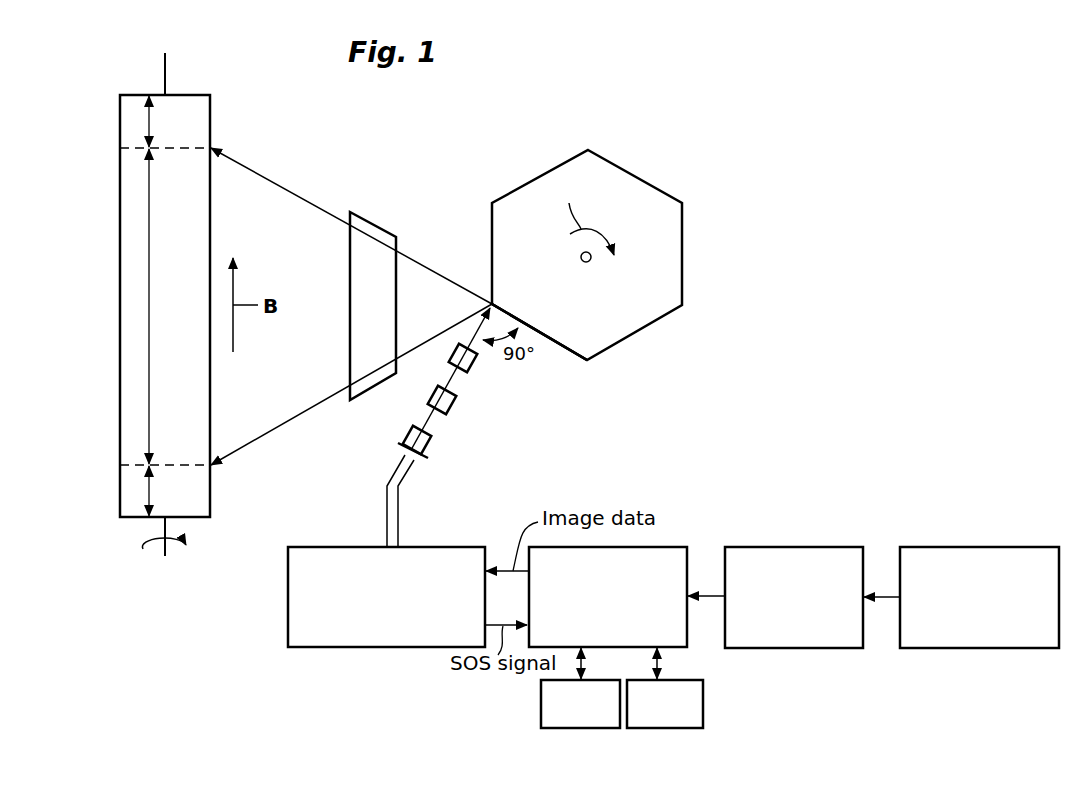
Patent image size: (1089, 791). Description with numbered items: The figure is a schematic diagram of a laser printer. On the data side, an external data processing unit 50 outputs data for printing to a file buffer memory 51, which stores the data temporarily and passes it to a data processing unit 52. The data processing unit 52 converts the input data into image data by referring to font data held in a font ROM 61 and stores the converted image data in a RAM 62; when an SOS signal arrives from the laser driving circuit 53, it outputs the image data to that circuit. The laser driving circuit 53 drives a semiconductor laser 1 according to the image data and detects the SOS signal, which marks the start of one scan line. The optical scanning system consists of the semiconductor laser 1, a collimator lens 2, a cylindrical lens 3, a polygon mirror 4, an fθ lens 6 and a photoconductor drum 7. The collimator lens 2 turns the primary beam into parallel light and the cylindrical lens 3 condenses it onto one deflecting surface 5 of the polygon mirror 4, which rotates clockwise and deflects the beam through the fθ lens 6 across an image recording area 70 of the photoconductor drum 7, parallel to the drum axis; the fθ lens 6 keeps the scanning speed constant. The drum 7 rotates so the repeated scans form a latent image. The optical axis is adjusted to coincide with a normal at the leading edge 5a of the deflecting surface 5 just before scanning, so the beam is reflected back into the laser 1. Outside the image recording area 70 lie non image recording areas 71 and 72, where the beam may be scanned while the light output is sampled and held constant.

The semiconductor laser 1 is at (422, 443).
The collimator lens 2 is at (452, 407).
The cylindrical lens 3 is at (472, 364).
The polygon mirror 4 is at (560, 157).
The deflecting surface 5 is at (552, 340).
The leading edge 5a is at (498, 297).
The fθ lens 6 is at (372, 237).
The photoconductor drum 7 is at (192, 104).
The external data processing unit 50 is at (955, 547).
The file buffer memory 51 is at (805, 547).
The data processing unit 52 is at (665, 547).
The laser driving circuit 53 is at (462, 547).
The font ROM 61 is at (541, 701).
The RAM 62 is at (703, 692).
The image recording area 70 is at (149, 303).
The non image recording area 71 is at (149, 491).
The non image recording area 72 is at (149, 121).